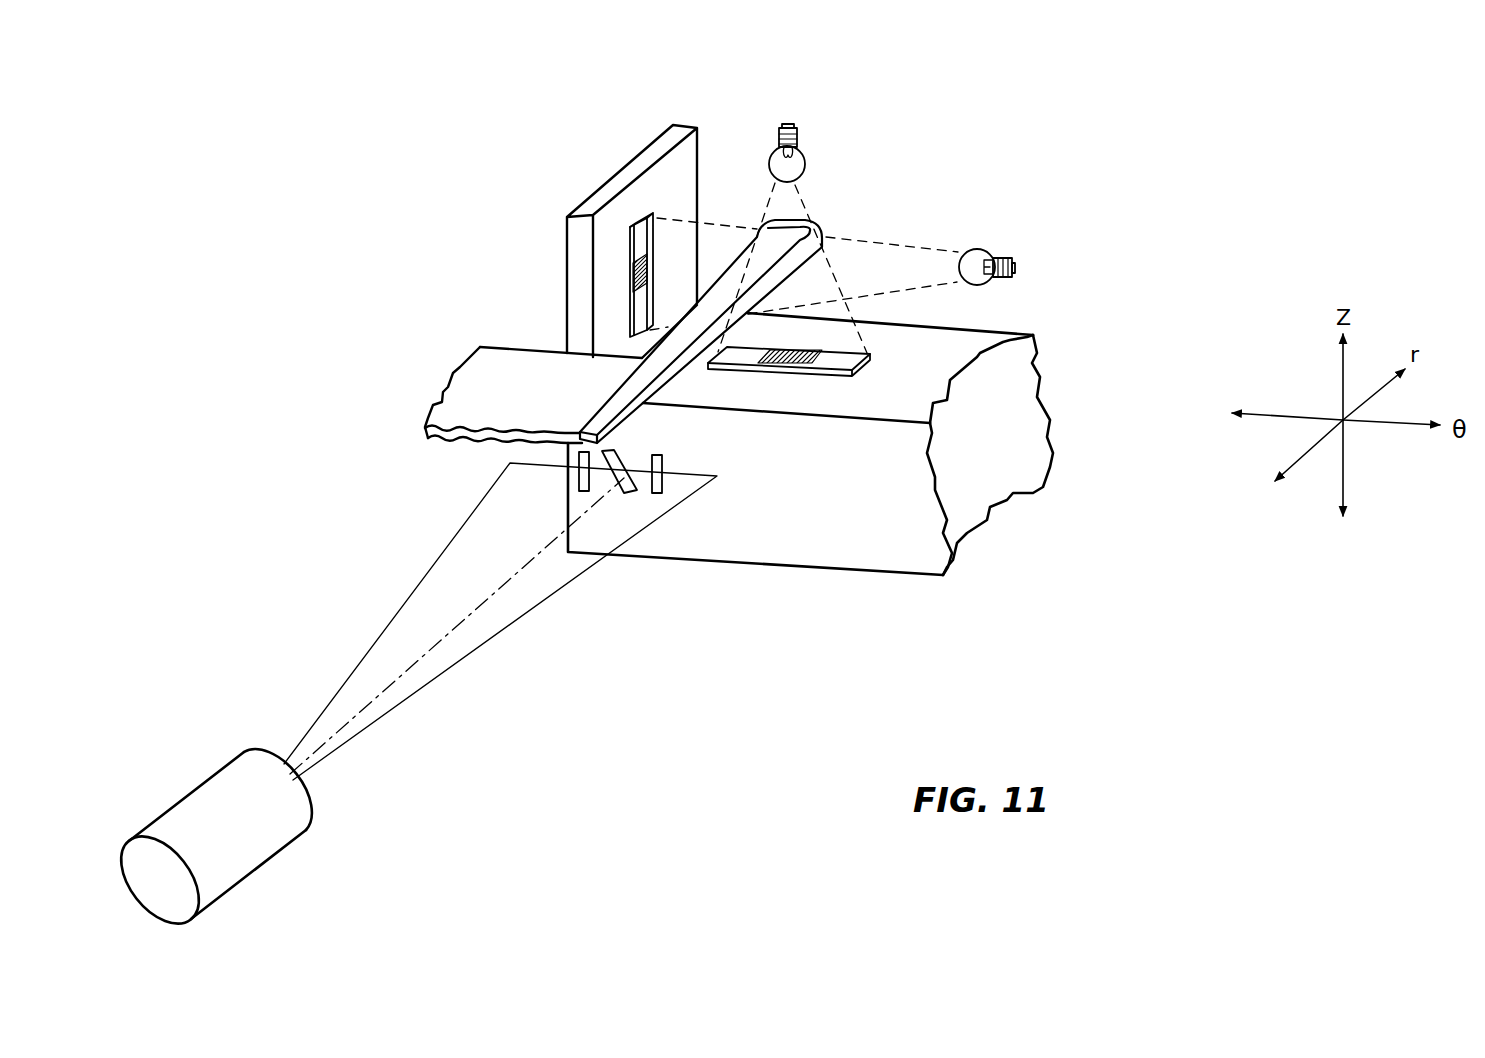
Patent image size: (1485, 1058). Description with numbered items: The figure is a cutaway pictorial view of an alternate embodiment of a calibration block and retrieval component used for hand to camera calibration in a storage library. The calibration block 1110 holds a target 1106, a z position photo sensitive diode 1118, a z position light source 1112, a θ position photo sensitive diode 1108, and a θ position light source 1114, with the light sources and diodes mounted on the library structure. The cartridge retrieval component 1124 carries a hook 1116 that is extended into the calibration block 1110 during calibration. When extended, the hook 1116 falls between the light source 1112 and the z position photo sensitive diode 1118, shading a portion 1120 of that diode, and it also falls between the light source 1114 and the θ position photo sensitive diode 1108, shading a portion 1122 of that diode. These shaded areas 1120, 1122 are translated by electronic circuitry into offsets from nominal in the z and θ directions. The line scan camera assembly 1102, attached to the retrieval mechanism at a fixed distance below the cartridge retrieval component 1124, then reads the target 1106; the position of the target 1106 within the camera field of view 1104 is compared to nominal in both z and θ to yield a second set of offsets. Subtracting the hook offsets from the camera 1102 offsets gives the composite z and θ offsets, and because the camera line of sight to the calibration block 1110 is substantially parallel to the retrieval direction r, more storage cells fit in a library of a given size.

The line scan camera assembly 1102 is at (243, 842).
The field of view 1104 is at (531, 622).
The target 1106 is at (668, 459).
The θ position photo sensitive diode 1108 is at (750, 372).
The calibration block 1110 is at (915, 532).
The z position light source 1112 is at (992, 250).
The θ position light source 1114 is at (803, 142).
The hook 1116 is at (831, 229).
The z position photo sensitive diode 1118 is at (632, 262).
The shaded portion 1120 is at (626, 290).
The shaded portion 1122 is at (790, 375).
The cartridge retrieval component 1124 is at (452, 408).